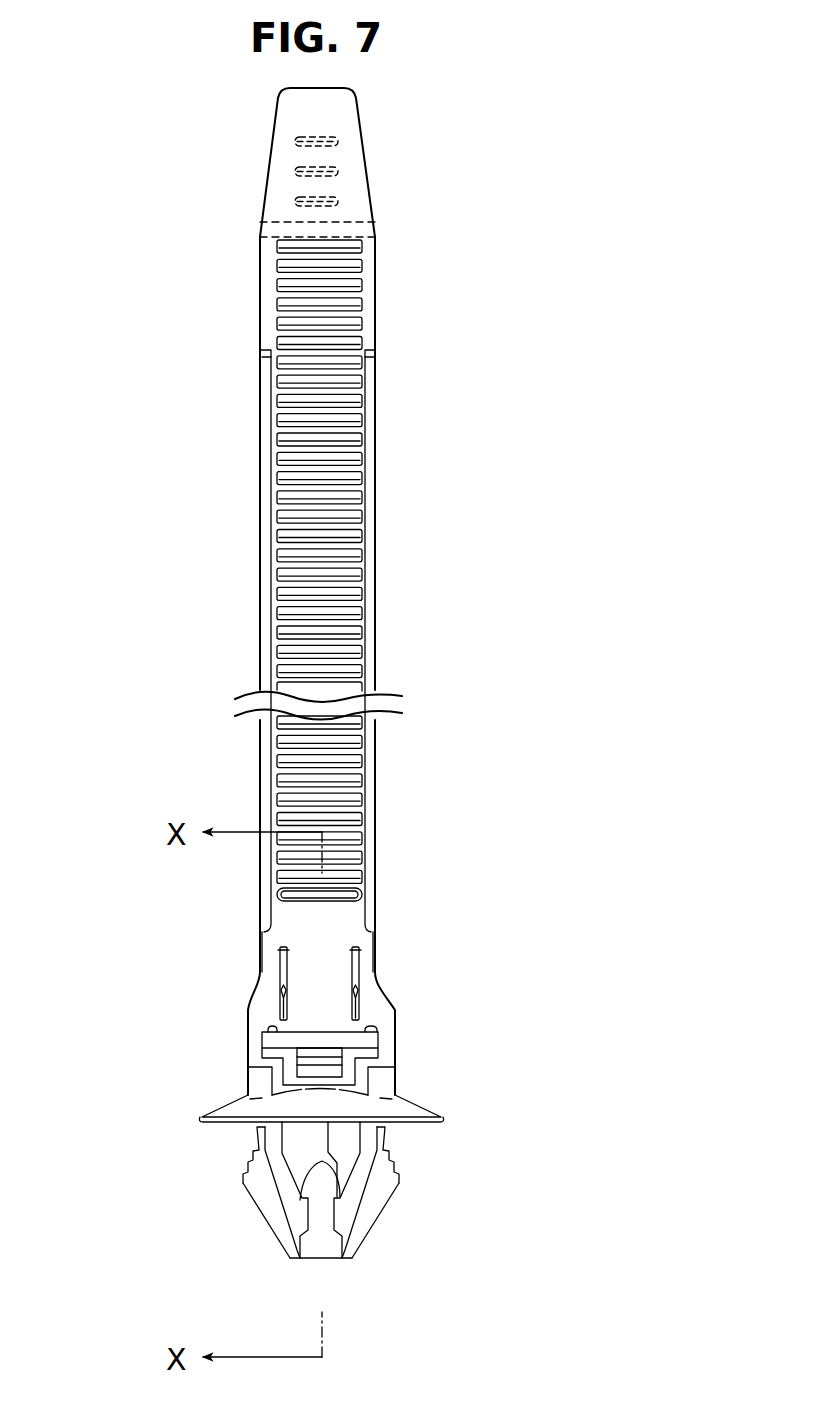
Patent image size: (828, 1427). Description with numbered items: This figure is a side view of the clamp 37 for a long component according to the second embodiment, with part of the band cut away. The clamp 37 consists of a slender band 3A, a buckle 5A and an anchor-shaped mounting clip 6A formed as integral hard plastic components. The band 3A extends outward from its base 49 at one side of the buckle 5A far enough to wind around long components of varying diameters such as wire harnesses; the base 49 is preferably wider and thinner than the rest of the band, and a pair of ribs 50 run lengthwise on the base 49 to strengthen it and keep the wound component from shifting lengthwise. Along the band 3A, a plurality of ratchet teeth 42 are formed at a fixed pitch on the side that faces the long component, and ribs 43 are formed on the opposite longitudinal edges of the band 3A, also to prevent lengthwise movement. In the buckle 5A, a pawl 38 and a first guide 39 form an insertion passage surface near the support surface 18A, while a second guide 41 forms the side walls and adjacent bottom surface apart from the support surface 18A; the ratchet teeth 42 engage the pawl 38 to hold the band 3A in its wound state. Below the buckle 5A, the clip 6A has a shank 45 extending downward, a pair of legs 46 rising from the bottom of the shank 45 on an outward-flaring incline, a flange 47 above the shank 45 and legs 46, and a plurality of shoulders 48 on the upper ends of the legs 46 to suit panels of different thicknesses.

The clamp 37 is at (485, 634).
The band 3A is at (379, 437).
The ratchet teeth 42 is at (306, 426).
The ribs 43 is at (373, 528).
The ribs 50 is at (283, 972).
The base 49 is at (373, 993).
The first guide 39 is at (308, 1038).
The support surface 18A is at (268, 1028).
The buckle 5A is at (404, 1063).
The second guide 41 is at (262, 1076).
The pawl 38 is at (320, 1071).
The flange 47 is at (418, 1110).
The mounting clip 6A is at (259, 1230).
The shank 45 is at (326, 1185).
The legs 46 is at (263, 1199).
The shoulders 48 is at (260, 1160).